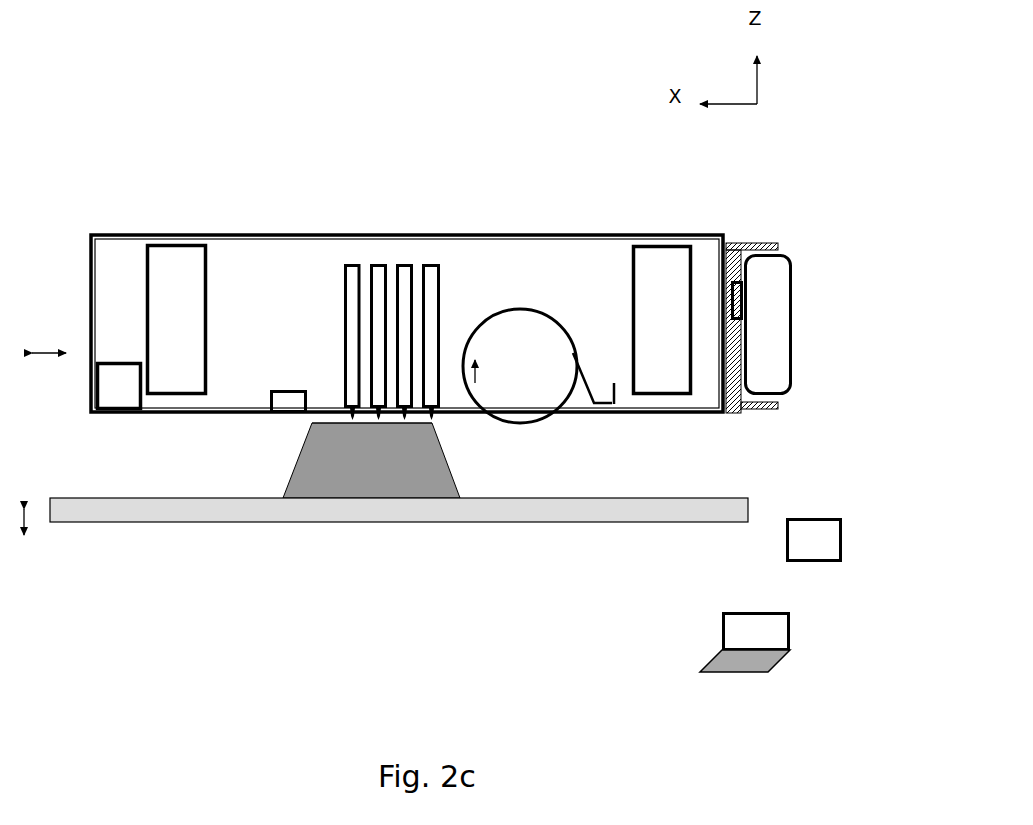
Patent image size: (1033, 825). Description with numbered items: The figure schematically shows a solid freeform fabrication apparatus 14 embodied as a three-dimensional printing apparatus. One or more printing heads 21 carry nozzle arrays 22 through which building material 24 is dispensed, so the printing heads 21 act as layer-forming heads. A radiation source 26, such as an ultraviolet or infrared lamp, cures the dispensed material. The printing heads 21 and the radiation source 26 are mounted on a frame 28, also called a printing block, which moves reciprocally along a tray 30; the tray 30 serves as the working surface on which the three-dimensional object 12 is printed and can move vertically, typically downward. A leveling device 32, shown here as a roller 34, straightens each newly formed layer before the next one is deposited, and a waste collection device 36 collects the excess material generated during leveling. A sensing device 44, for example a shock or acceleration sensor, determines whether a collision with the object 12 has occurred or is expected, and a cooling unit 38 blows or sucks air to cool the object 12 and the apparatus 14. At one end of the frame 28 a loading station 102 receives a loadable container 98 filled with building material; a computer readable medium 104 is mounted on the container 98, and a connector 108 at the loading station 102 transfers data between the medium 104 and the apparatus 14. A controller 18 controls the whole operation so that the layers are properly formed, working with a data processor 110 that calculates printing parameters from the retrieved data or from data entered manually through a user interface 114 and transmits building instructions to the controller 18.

The solid freeform fabrication apparatus 14 is at (170, 55).
The frame 28 is at (208, 234).
The cooling unit 38 is at (117, 390).
The printing heads 21 is at (346, 307).
The nozzle arrays 22 is at (338, 418).
The sensing device 44 is at (288, 400).
The leveling device 32 is at (530, 297).
The roller 34 is at (513, 369).
The waste collection device 36 is at (596, 404).
The radiation source 26 is at (658, 258).
The connector 108 is at (743, 241).
The loading station 102 is at (736, 409).
The computer readable medium 104 is at (747, 288).
The loadable container 98 is at (768, 325).
The three-dimensional object 12 is at (302, 455).
The building material 24 is at (440, 425).
The tray 30 is at (135, 505).
The controller 18 is at (814, 540).
The data processor 110 is at (790, 633).
The user interface 114 is at (722, 653).